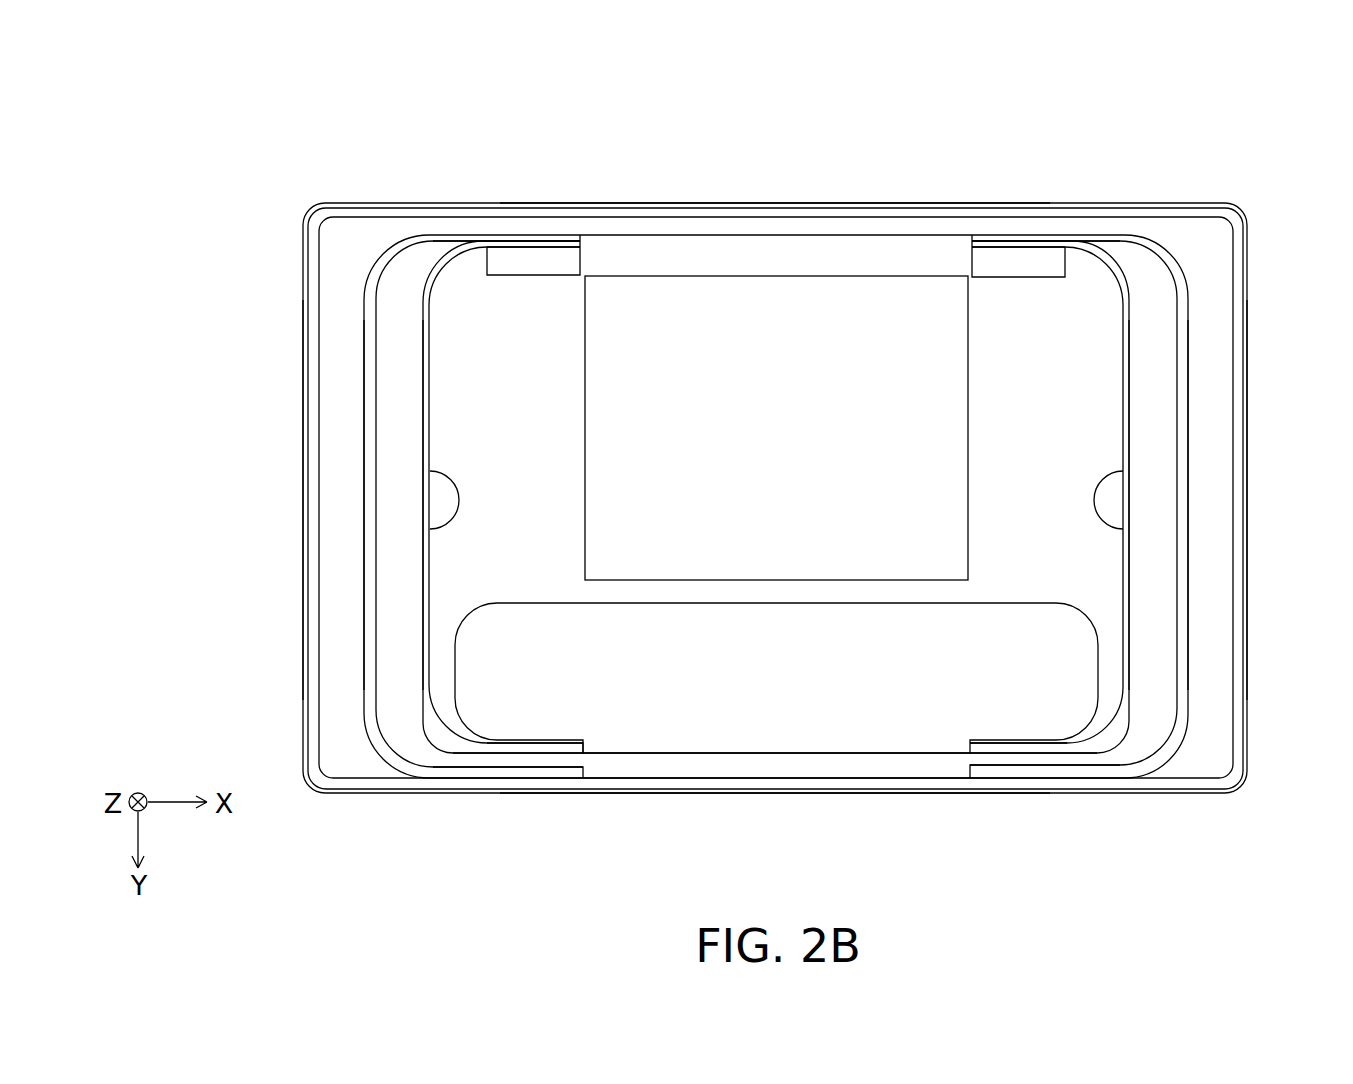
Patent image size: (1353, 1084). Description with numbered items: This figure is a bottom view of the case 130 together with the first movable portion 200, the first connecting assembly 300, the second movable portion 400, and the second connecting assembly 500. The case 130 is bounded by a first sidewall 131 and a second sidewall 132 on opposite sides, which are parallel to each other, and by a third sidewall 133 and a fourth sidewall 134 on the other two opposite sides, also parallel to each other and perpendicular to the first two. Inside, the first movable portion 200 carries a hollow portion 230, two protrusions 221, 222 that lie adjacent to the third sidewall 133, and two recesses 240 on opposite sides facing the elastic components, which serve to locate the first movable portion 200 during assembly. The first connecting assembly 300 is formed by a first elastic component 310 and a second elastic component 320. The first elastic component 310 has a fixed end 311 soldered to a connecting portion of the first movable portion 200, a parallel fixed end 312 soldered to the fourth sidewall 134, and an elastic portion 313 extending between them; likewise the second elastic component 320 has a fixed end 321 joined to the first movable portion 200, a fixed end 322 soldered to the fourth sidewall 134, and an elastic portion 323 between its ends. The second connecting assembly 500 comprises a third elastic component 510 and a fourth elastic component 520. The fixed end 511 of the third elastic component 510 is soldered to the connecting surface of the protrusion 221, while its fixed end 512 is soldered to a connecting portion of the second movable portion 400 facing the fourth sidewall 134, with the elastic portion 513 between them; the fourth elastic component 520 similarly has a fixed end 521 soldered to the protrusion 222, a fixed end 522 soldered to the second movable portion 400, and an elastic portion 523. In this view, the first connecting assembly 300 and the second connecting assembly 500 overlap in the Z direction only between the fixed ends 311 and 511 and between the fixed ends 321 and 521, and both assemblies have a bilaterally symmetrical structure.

The case 130 is at (368, 179).
The first sidewall 131 is at (1248, 437).
The second sidewall 132 is at (303, 435).
The third sidewall 133 is at (692, 202).
The fourth sidewall 134 is at (766, 795).
The first movable portion 200 is at (1108, 364).
The protrusion 221 is at (985, 262).
The protrusion 222 is at (565, 262).
The hollow portion 230 is at (772, 300).
The recesses 240 is at (459, 500).
The first connecting assembly 300 is at (140, 43).
The first elastic component 310 is at (1232, 815).
The fixed end 311 is at (1000, 238).
The fixed end 312 is at (1047, 772).
The elastic portion 313 is at (1182, 596).
The second elastic component 320 is at (316, 815).
The fixed end 321 is at (553, 238).
The fixed end 322 is at (505, 773).
The elastic portion 323 is at (372, 596).
The second movable portion 400 is at (1073, 715).
The second connecting assembly 500 is at (140, 145).
The third elastic component 510 is at (1268, 677).
The fixed end 511 is at (1030, 245).
The fixed end 512 is at (983, 742).
The elastic portion 513 is at (1128, 555).
The fourth elastic component 520 is at (277, 677).
The fixed end 521 is at (520, 245).
The fixed end 522 is at (572, 742).
The elastic portion 523 is at (427, 555).